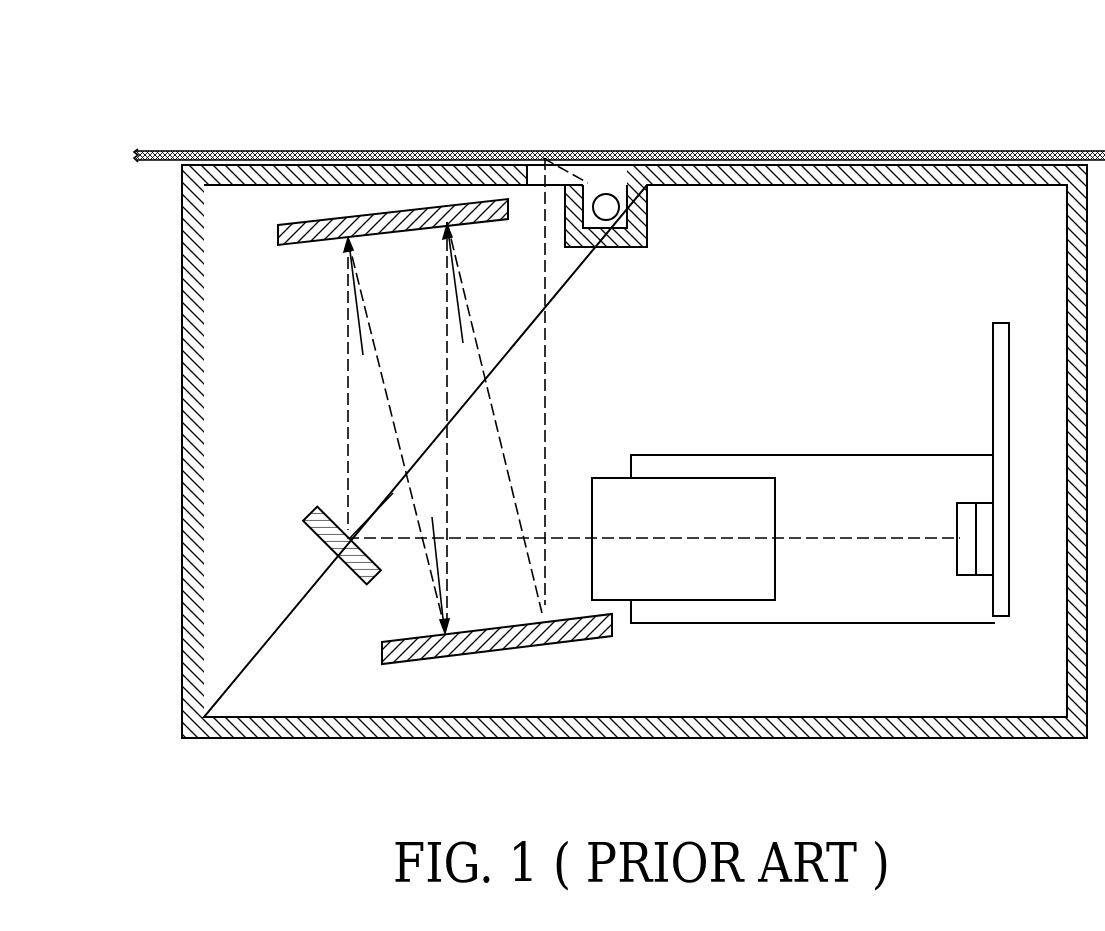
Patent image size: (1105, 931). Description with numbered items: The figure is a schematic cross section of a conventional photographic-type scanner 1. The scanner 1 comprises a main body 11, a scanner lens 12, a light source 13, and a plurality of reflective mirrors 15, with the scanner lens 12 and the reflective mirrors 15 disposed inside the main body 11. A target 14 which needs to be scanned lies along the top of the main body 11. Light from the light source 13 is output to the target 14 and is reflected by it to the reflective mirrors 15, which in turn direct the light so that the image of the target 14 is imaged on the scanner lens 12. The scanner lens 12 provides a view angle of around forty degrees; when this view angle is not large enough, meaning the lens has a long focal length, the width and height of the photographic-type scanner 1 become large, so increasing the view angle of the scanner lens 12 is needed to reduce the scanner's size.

The photographic-type scanner 1 is at (619, 420).
The main body 11 is at (233, 182).
The scanner lens 12 is at (707, 578).
The light source 13 is at (613, 203).
The target 14 is at (795, 152).
The reflective mirrors 15 is at (333, 222).